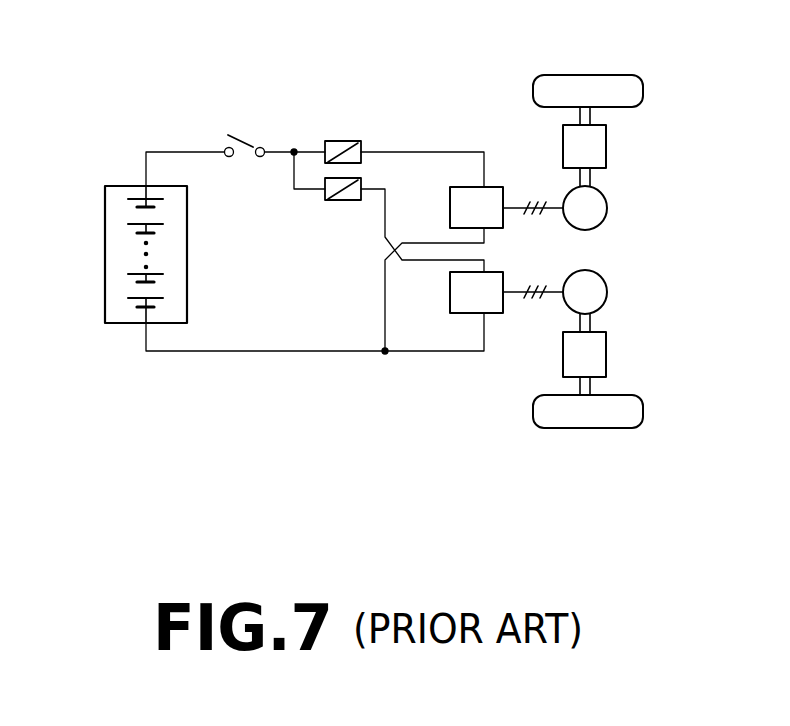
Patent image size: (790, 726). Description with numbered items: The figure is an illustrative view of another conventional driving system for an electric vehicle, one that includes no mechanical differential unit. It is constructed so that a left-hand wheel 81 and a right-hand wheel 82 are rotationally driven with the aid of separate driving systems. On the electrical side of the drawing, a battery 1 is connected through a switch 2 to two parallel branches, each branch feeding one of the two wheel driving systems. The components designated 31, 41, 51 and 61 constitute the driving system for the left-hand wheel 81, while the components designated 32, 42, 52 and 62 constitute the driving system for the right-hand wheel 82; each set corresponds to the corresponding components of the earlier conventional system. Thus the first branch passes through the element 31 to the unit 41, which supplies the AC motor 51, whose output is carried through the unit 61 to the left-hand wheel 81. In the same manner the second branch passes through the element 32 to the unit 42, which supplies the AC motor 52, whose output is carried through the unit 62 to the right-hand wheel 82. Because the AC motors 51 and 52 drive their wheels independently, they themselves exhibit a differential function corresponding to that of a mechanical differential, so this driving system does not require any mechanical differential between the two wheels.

The battery 1 is at (105, 262).
The main switch 2 is at (238, 131).
The fuse 31 is at (345, 141).
The fuse 32 is at (338, 200).
The inverter 41 is at (488, 187).
The inverter 42 is at (503, 313).
The AC motor 51 is at (607, 208).
The AC motor 52 is at (607, 290).
The reduction gear 61 is at (606, 143).
The reduction gear 62 is at (606, 355).
The left-hand wheel 81 is at (592, 75).
The right-hand wheel 82 is at (585, 428).